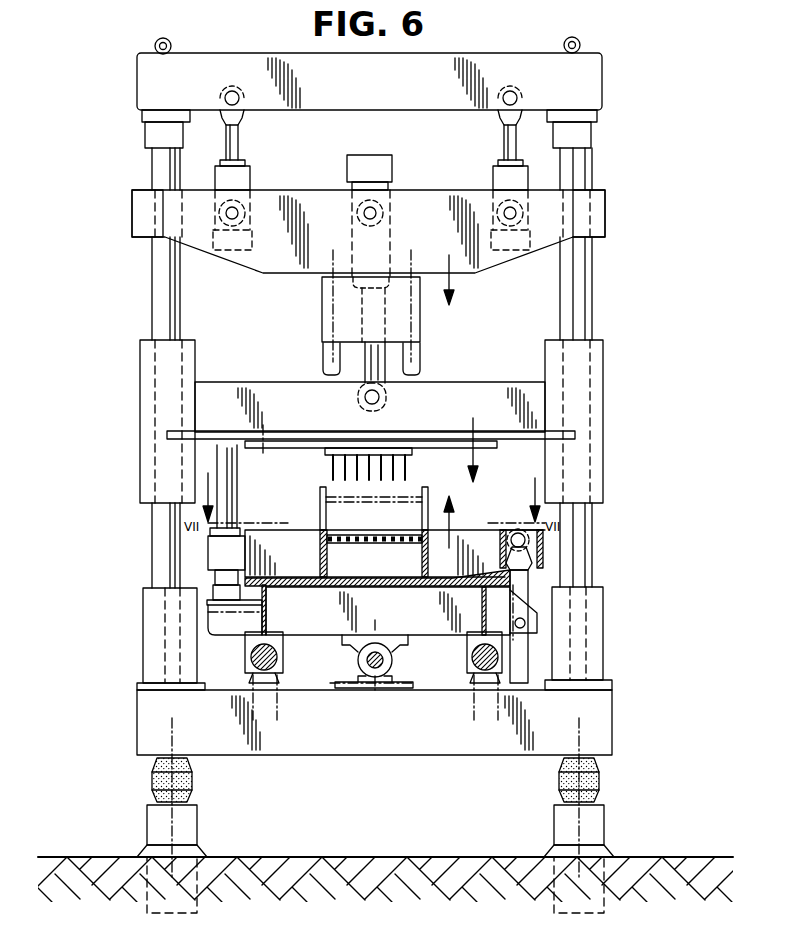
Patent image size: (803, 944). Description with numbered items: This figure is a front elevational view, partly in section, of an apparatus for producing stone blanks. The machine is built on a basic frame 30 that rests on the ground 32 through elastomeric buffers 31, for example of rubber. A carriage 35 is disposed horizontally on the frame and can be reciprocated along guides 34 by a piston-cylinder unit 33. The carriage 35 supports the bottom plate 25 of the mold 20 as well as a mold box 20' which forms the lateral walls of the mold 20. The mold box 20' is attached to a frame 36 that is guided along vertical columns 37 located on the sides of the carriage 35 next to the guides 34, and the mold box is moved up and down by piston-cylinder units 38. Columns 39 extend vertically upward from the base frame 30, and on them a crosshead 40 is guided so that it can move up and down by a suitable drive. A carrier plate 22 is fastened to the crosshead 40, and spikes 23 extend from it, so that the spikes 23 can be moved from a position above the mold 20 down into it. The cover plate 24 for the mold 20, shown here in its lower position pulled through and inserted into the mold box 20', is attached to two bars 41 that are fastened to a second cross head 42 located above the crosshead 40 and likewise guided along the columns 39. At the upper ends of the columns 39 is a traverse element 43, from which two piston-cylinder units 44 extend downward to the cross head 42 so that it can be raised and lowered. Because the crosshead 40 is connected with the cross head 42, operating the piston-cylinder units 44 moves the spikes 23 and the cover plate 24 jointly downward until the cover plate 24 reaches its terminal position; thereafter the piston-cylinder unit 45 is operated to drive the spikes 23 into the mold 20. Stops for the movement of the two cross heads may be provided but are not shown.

The mold 20 is at (395, 532).
The mold box 20' is at (353, 553).
The carrier plate 22 is at (400, 442).
The spikes 23 is at (403, 460).
The cover plate 24 is at (363, 537).
The bottom plate 25 is at (360, 578).
The basic frame 30 is at (355, 736).
The elastomeric buffers 31 is at (192, 780).
The ground 32 is at (408, 870).
The piston-cylinder unit 33 is at (392, 661).
The guides 34 is at (283, 660).
The carriage 35 is at (321, 622).
The frame 36 is at (470, 540).
The vertical columns 37 is at (225, 468).
The piston-cylinder units 38 is at (520, 685).
The columns 39 is at (152, 547).
The crosshead 40 is at (497, 400).
The bars 41 is at (322, 357).
The cross head 42 is at (437, 244).
The traverse element 43 is at (395, 92).
The piston-cylinder units 44 is at (250, 178).
The piston-cylinder unit 45 is at (388, 166).